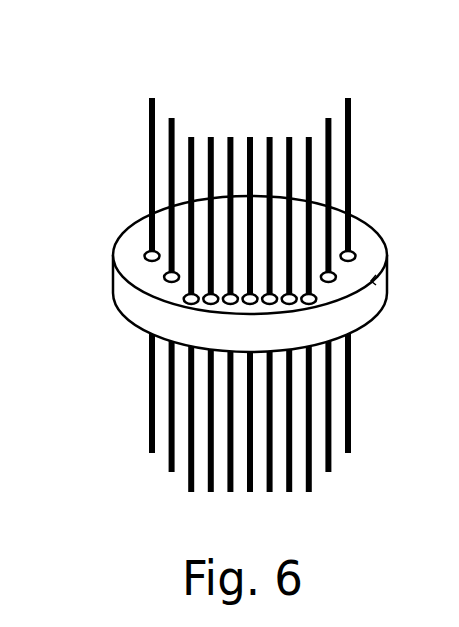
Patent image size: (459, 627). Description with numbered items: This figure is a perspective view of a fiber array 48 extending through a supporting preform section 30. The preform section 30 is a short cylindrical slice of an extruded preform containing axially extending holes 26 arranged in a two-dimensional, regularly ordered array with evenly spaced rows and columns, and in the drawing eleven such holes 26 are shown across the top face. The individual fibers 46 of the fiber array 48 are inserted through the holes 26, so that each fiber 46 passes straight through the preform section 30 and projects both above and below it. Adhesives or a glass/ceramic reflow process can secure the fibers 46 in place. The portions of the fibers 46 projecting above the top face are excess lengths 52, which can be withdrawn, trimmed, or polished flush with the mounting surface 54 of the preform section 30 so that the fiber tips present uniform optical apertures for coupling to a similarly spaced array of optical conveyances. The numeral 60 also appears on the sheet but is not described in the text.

The holes 26 is at (163, 278).
The preform section 30 is at (390, 291).
The fibers 46 is at (150, 400).
The fiber array 48 is at (360, 422).
The excess lengths 52 is at (149, 137).
The mounting surface 54 is at (130, 250).
The reference 60 is at (445, 579).